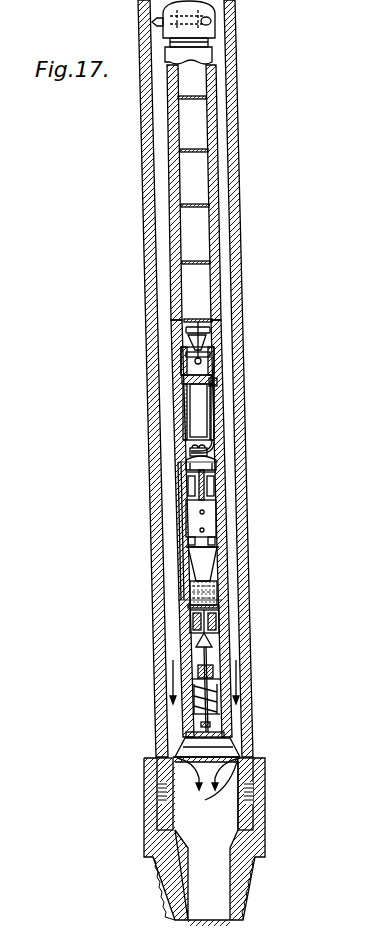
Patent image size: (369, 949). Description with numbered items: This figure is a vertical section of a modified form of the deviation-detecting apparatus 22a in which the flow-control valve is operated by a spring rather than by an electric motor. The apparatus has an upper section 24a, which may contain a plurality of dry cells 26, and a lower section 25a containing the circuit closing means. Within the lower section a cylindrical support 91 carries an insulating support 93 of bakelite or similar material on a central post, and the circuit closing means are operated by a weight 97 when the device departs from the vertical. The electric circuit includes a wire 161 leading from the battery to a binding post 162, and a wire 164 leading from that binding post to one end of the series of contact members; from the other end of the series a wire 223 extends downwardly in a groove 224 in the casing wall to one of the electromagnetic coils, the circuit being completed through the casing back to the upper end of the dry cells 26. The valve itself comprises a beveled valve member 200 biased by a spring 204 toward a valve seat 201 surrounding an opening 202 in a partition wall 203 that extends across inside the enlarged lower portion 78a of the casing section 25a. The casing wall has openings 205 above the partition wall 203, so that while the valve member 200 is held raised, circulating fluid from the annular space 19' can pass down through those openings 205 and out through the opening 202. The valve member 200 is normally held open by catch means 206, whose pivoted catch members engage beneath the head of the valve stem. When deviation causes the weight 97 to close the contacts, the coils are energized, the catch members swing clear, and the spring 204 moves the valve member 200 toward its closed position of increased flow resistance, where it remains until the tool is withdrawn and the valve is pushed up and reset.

The upper section 24a is at (213, 218).
The dry cells 26 is at (198, 287).
The wire 161 is at (201, 364).
The binding post 162 is at (213, 382).
The detecting apparatus 22a is at (212, 408).
The wire 164 is at (182, 449).
The insulating support 93 is at (214, 462).
The groove 224 is at (180, 500).
The cylindrical support 91 is at (210, 517).
The lower section 25a is at (180, 547).
The weight 97 is at (207, 562).
The wire 223 is at (184, 578).
The annular space 19' is at (238, 628).
The catch means 206 is at (215, 644).
The spring 204 is at (213, 693).
The openings 205 is at (233, 740).
The valve member 200 is at (177, 757).
The valve seat 201 is at (166, 783).
The opening 202 is at (203, 790).
The partition wall 203 is at (213, 762).
The enlarged lower portion 78a is at (246, 810).